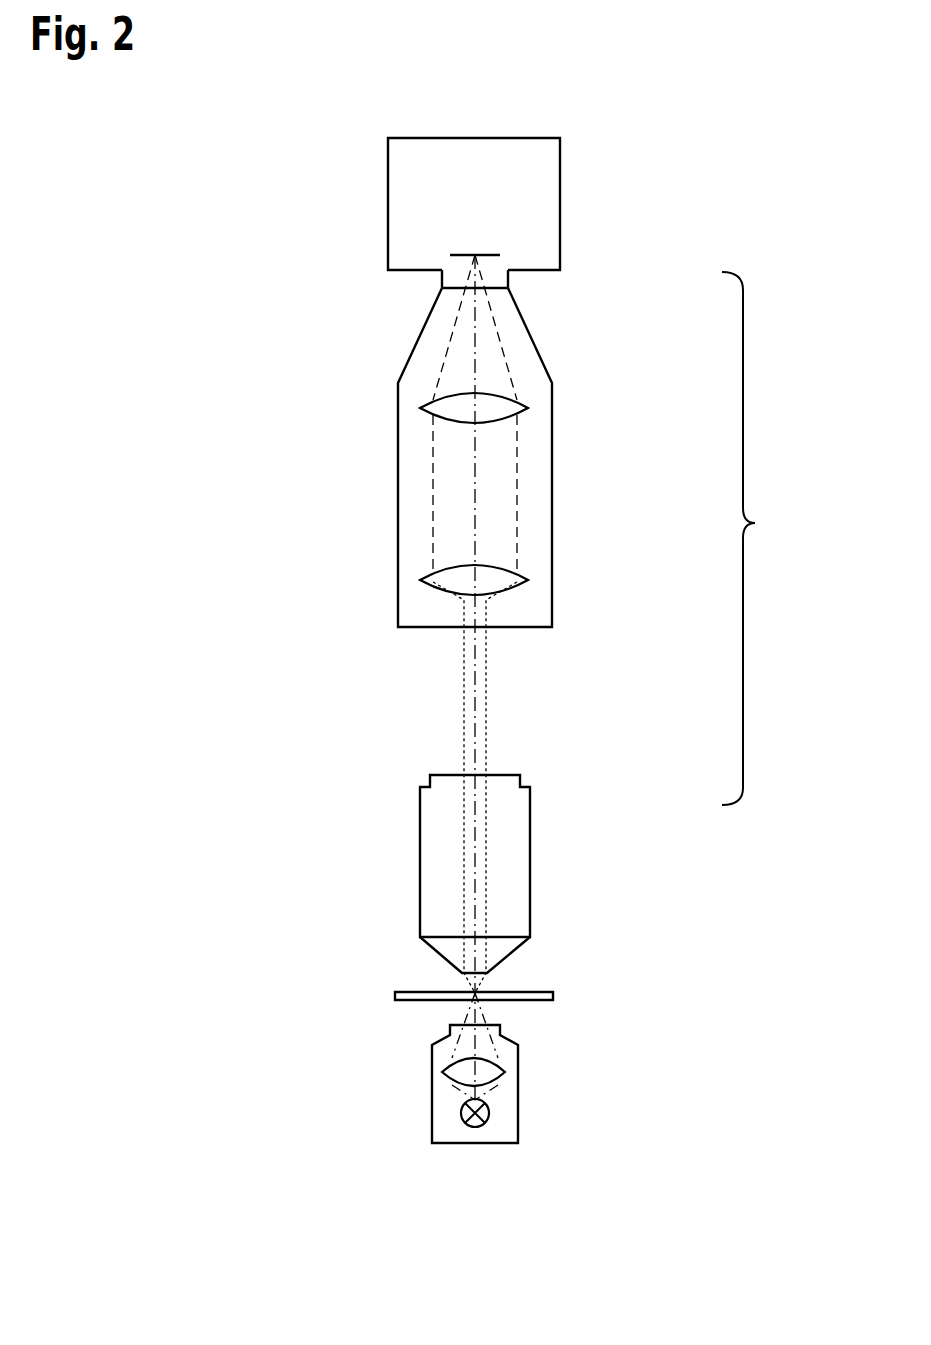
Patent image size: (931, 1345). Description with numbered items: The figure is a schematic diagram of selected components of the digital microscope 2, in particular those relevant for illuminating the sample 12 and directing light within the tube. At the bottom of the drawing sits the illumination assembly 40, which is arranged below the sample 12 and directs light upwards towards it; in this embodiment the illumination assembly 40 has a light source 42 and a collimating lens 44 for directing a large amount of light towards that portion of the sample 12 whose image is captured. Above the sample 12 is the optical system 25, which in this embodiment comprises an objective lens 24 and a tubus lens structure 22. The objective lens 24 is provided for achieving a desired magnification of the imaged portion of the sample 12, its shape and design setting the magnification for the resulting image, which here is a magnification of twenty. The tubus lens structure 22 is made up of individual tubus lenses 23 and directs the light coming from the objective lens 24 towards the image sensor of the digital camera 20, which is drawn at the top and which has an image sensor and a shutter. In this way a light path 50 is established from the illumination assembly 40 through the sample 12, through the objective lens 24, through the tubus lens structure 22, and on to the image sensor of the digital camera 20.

The digital microscope 2 is at (190, 240).
The digital camera 20 is at (545, 195).
The tubus lens structure 22 is at (515, 345).
The tubus lenses 23 is at (492, 407).
The objective lens 24 is at (513, 840).
The optical system 25 is at (756, 538).
The sample 12 is at (535, 990).
The illumination assembly 40 is at (505, 1105).
The light source 42 is at (474, 1127).
The collimating lens 44 is at (480, 1068).
The light path 50 is at (462, 700).